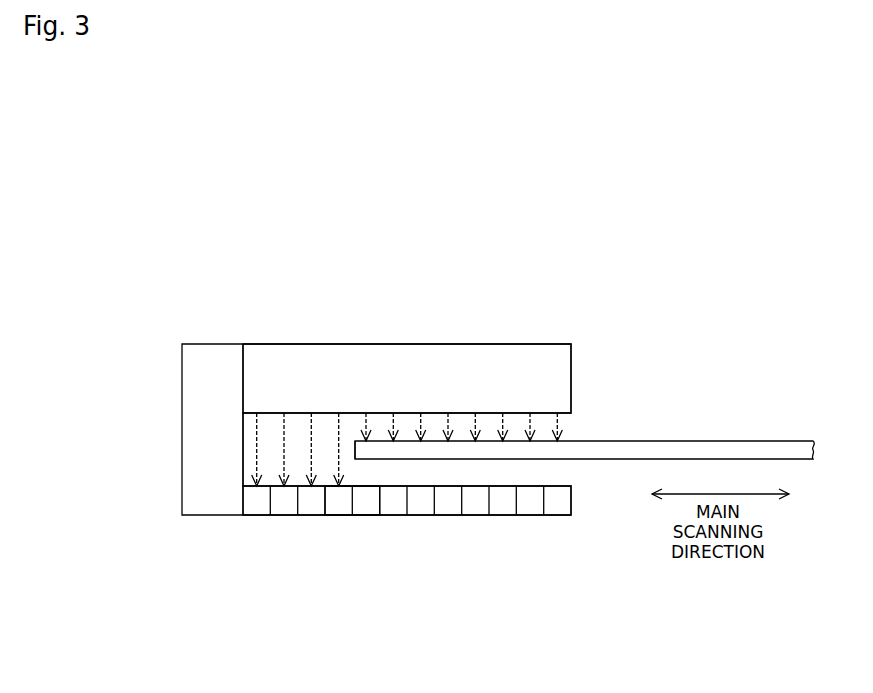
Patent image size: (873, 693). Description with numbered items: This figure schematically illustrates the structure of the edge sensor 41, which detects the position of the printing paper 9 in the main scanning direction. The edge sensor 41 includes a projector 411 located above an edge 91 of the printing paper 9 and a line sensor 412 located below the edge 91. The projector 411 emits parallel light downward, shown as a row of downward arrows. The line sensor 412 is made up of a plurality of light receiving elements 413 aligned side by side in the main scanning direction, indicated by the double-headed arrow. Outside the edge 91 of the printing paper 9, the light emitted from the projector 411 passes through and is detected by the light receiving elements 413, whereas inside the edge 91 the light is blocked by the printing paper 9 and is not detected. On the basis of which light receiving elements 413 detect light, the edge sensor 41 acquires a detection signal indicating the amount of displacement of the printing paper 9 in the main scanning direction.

The edge sensor 41 is at (308, 290).
The projector 411 is at (429, 375).
The line sensor 412 is at (447, 525).
The light receiving elements 413 is at (338, 500).
The printing paper 9 is at (668, 450).
The edge 91 is at (350, 450).